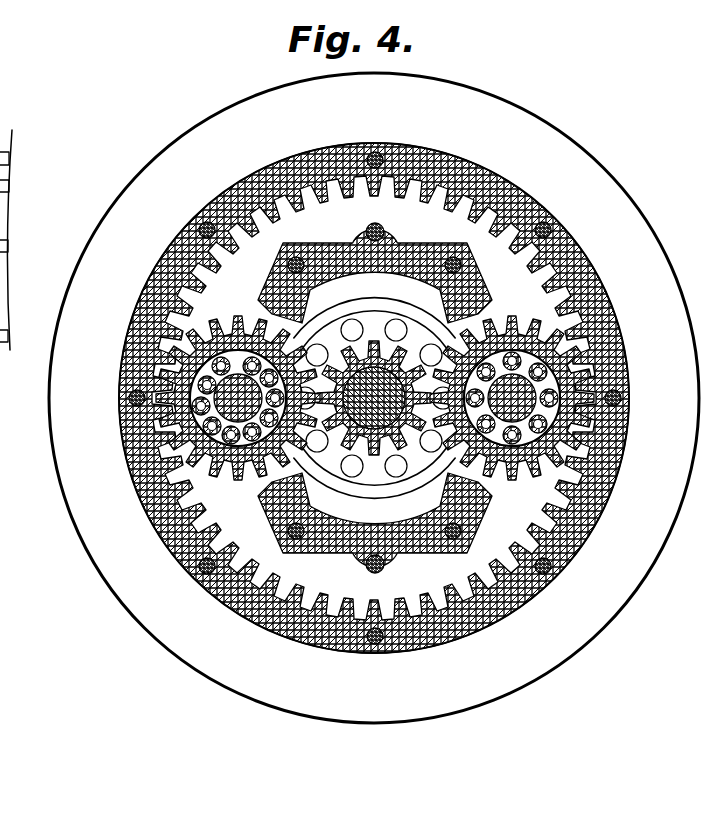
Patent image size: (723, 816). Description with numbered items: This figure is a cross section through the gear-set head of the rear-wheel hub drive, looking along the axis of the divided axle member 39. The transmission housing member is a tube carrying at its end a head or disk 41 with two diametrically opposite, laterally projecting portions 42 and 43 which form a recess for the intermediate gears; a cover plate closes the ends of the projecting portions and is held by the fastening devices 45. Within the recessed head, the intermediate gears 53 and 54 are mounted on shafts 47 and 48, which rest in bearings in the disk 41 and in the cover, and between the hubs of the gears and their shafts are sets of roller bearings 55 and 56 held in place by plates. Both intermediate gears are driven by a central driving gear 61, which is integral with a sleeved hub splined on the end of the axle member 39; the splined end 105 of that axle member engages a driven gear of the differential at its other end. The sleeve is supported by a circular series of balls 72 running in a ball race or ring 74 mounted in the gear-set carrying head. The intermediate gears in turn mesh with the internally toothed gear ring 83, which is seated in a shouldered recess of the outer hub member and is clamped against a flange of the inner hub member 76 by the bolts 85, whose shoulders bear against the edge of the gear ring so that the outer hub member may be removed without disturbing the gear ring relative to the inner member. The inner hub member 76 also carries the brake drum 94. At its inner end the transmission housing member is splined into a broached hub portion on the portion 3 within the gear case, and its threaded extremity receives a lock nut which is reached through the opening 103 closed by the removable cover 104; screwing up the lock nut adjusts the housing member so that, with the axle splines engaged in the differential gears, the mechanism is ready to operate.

The portion within the gear case 3 is at (700, 396).
The power transmission shaft or divided axle member 39 is at (505, 465).
The head 41 is at (546, 393).
The laterally projecting portion 42 is at (500, 310).
The laterally projecting portion 43 is at (480, 470).
The fastening devices 45 is at (385, 228).
The shaft 47 is at (607, 287).
The shaft 48 is at (196, 463).
The intermediate gear 53 is at (597, 283).
The intermediate gear 54 is at (207, 498).
The set of roller bearings 55 is at (392, 420).
The set of roller bearings 56 is at (165, 454).
The driving gear 61 is at (250, 510).
The circular series of balls 72 is at (230, 613).
The ball race or ring 74 is at (207, 566).
The inner hub member 76 is at (233, 492).
The internally toothed gear ring 83 is at (122, 425).
The bolts 85 is at (268, 540).
The brake drum 94 is at (522, 123).
The opening 103 is at (16, 185).
The removable cover 104 is at (14, 160).
The splined end of axle member 105 is at (420, 497).